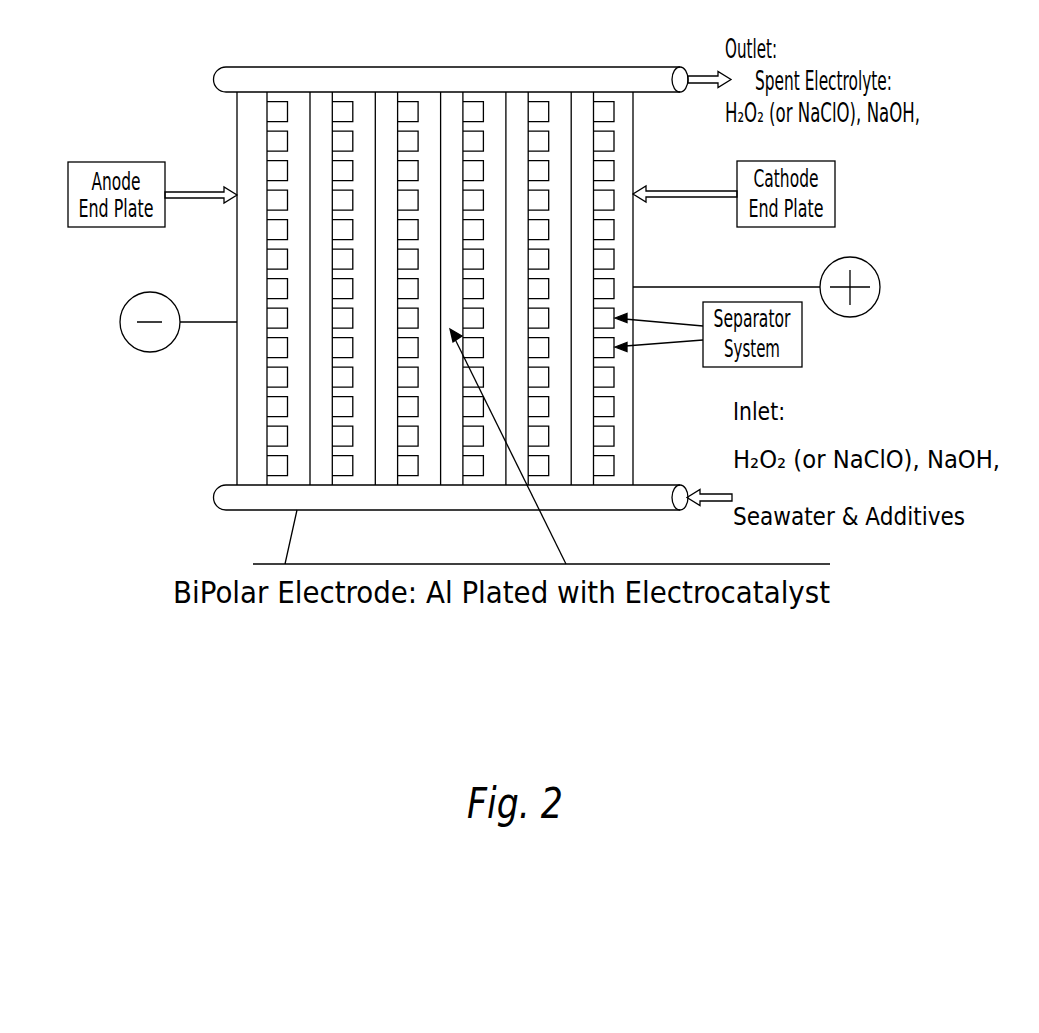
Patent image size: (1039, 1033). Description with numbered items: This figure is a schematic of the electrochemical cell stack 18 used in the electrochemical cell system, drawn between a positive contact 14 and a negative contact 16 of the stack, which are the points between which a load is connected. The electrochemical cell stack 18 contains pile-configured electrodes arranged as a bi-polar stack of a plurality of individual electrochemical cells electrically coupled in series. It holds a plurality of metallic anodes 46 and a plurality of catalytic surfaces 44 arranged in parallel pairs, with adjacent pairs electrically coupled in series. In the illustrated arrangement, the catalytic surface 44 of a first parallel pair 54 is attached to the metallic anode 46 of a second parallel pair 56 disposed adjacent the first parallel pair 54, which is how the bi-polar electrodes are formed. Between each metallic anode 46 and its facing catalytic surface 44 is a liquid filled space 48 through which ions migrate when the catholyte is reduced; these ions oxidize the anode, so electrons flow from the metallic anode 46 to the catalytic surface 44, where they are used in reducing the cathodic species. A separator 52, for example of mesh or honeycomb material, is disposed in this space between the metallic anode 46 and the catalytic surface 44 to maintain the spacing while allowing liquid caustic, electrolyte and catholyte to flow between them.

The positive contact 14 is at (880, 287).
The negative contact 16 is at (120, 322).
The electrochemical cell stack 18 is at (172, 392).
The catalytic surface 44 is at (574, 520).
The metallic anode 46 is at (583, 103).
The liquid filled space 48 is at (655, 437).
The separator 52 is at (660, 383).
The first parallel pair 54 is at (363, 146).
The second parallel pair 56 is at (297, 262).